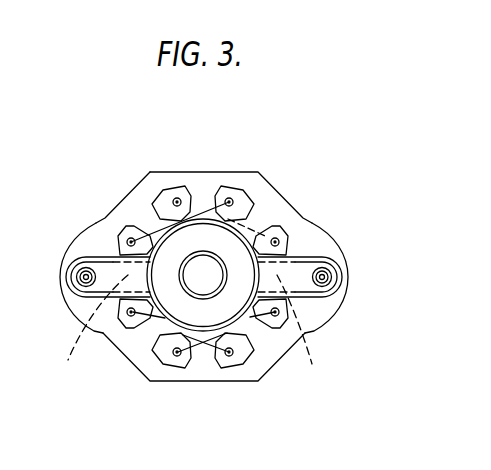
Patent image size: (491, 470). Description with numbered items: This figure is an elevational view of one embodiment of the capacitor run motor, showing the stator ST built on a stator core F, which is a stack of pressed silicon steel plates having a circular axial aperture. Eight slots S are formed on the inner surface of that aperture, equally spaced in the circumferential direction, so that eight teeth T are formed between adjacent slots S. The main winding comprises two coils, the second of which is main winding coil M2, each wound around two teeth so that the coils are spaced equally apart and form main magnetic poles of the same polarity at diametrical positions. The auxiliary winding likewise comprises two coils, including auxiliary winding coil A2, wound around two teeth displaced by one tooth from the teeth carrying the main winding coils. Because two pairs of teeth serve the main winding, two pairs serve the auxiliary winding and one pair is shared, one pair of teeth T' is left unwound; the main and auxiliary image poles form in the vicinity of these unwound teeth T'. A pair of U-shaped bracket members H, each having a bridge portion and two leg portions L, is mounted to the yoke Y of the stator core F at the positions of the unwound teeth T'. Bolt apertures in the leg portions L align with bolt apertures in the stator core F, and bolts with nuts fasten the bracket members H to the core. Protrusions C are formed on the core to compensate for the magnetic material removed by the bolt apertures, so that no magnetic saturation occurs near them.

The slots S is at (246, 199).
The stator ST is at (286, 209).
The yoke Y is at (326, 230).
The protrusions C is at (74, 298).
The leg portions L is at (76, 316).
The unwound teeth T' is at (188, 305).
The stator core F is at (122, 363).
The bracket members H is at (163, 312).
The second main winding coil M2 is at (203, 333).
The second auxiliary winding coil A2 is at (227, 357).
The teeth T is at (269, 354).